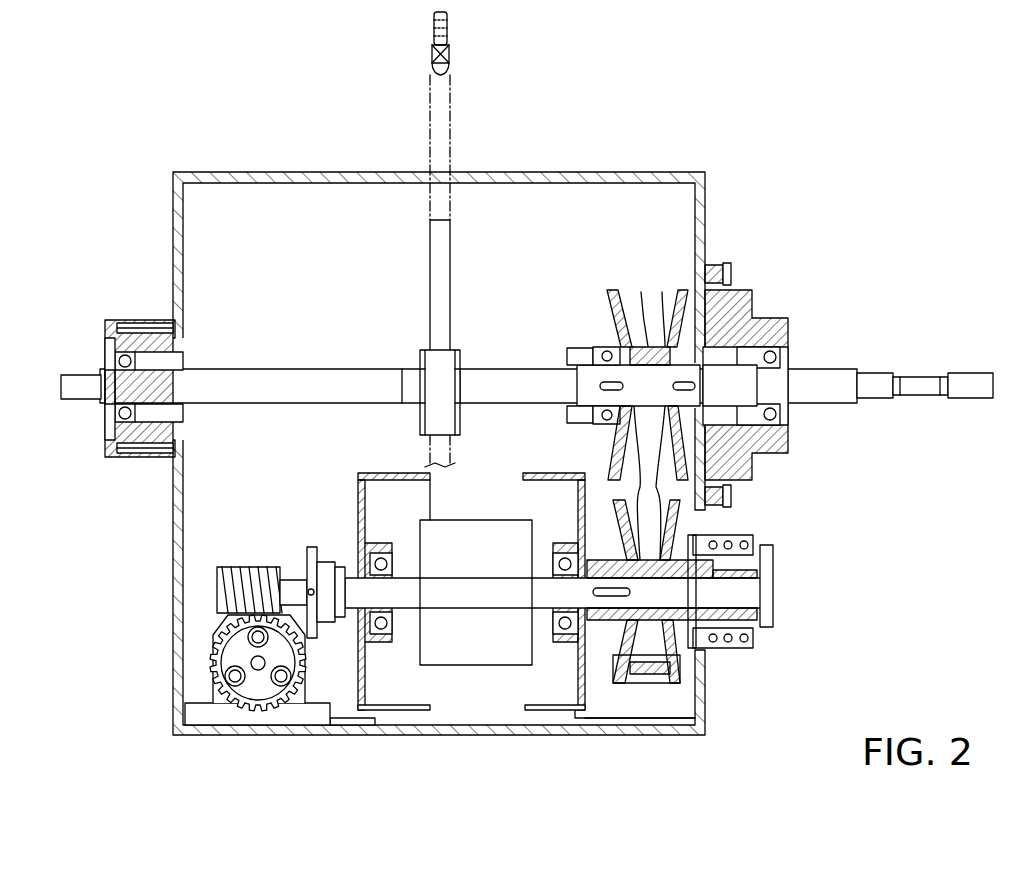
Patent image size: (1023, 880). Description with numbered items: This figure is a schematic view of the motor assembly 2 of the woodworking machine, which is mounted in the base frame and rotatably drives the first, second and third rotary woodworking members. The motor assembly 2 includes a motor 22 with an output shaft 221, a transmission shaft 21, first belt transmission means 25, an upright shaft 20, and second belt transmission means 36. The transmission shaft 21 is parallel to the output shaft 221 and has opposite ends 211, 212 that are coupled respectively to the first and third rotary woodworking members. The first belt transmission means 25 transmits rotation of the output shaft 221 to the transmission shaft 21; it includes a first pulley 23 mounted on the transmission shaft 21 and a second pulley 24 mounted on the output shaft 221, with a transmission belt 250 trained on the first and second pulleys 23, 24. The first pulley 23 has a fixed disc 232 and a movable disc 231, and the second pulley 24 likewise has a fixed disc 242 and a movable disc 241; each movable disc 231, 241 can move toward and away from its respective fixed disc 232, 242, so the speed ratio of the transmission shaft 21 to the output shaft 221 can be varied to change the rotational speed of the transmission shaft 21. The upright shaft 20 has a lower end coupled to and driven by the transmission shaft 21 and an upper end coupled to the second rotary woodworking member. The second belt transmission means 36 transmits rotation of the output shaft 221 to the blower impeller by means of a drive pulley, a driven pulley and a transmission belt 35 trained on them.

The motor assembly 2 is at (463, 657).
The upright shaft 20 is at (443, 87).
The transmission shaft 21 is at (253, 380).
The end of transmission shaft 211 is at (77, 380).
The end of transmission shaft 212 is at (957, 380).
The motor 22 is at (445, 648).
The output shaft 221 is at (575, 640).
The first pulley 23 is at (696, 291).
The movable disc 231 is at (607, 305).
The fixed disc 232 is at (673, 298).
The second pulley 24 is at (623, 638).
The movable disc 241 is at (613, 523).
The fixed disc 242 is at (672, 685).
The first belt transmission means 25 is at (653, 490).
The transmission belt 250 is at (647, 292).
The transmission belt 35 is at (765, 598).
The second belt transmission means 36 is at (768, 548).